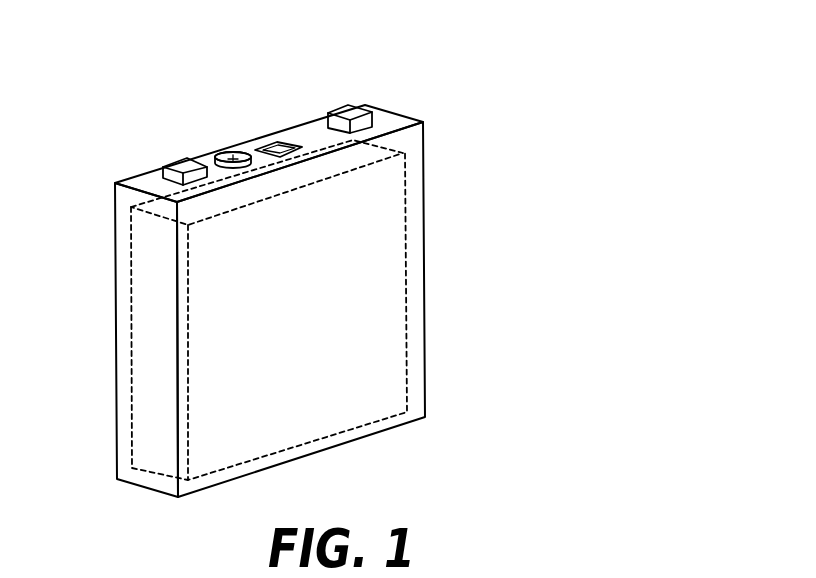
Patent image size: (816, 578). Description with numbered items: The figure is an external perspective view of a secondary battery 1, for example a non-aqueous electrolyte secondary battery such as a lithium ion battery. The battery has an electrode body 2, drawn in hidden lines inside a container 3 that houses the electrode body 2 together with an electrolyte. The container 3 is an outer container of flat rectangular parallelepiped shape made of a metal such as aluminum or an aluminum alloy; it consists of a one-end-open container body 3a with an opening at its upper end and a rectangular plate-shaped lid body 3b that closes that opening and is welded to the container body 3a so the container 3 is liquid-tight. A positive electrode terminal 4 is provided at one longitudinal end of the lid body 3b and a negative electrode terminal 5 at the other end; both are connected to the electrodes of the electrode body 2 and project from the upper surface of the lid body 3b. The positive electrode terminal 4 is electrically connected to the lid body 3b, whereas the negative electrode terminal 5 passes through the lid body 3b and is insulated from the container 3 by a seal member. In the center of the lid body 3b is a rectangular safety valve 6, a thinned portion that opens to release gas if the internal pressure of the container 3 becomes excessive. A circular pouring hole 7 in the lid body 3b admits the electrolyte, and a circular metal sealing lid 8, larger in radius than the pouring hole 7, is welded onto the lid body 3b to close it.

The secondary battery 1 is at (436, 87).
The electrode body 2 is at (403, 253).
The container 3 is at (425, 317).
The container body 3a is at (124, 234).
The lid body 3b is at (133, 177).
The positive electrode terminal 4 is at (172, 162).
The negative electrode terminal 5 is at (350, 107).
The safety valve 6 is at (283, 143).
The pouring hole 7 is at (228, 145).
The sealing lid 8 is at (237, 152).